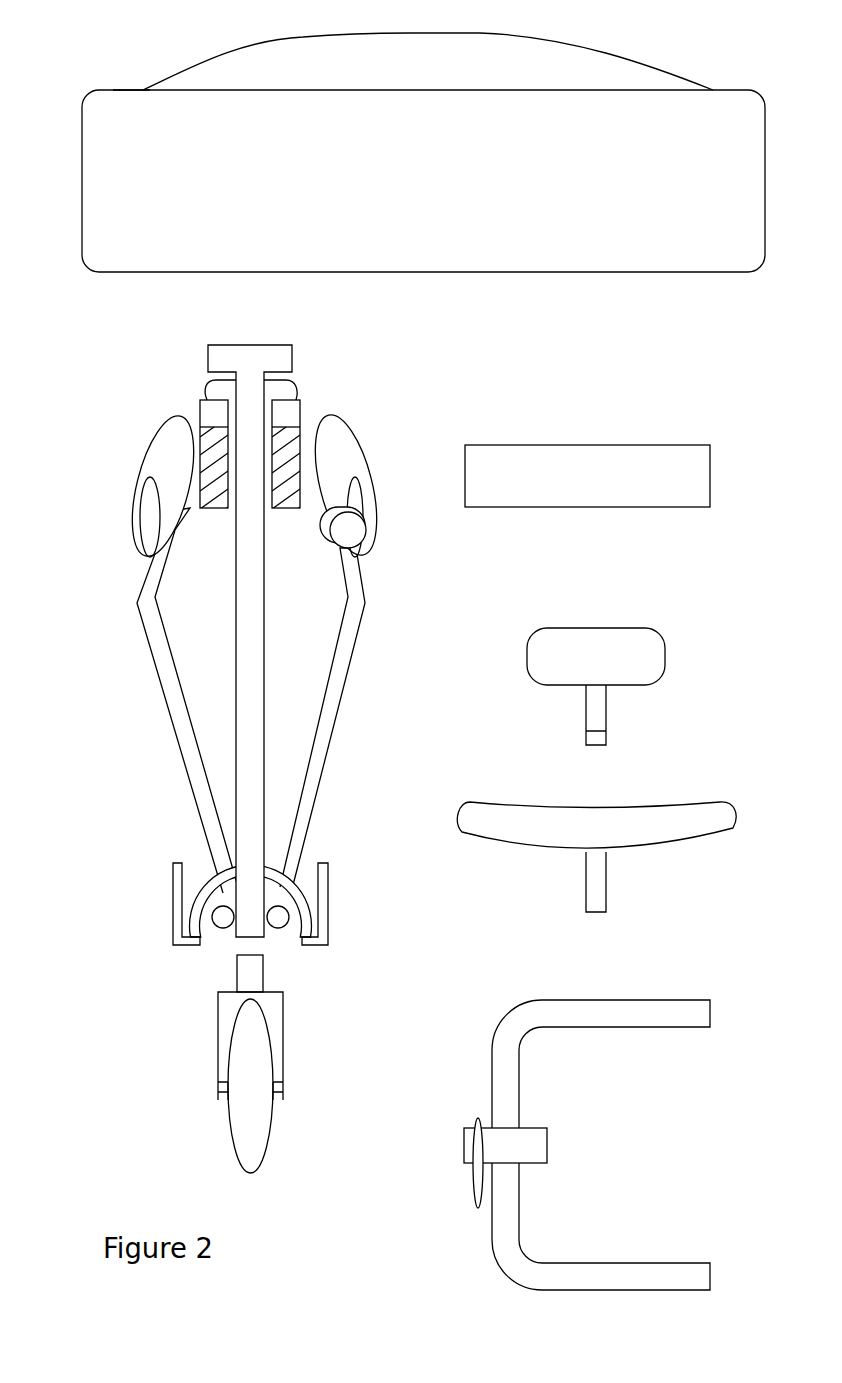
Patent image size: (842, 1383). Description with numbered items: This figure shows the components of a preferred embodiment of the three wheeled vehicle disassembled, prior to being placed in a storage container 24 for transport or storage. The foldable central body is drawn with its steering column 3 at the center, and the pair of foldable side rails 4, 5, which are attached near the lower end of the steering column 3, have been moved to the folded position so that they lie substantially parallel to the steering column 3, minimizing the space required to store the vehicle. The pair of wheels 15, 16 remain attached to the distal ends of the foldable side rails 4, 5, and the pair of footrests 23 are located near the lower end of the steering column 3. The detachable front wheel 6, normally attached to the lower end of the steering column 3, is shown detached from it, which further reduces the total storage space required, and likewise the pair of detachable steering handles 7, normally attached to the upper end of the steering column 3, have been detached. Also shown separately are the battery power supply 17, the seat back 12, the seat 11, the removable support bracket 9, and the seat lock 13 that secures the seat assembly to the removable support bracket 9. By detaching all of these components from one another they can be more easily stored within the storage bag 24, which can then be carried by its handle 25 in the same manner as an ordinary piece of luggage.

The handle 25 is at (220, 53).
The storage container 24 is at (608, 253).
The detachable steering handles 7 is at (197, 400).
The wheel 16 is at (155, 453).
The wheel 15 is at (345, 445).
The steering column 3 is at (245, 663).
The foldable side rail 5 is at (152, 672).
The foldable side rail 4 is at (337, 670).
The footrests 23 is at (173, 908).
The detachable front wheel 6 is at (237, 1037).
The battery power supply 17 is at (618, 463).
The seat back 12 is at (600, 645).
The seat 11 is at (655, 827).
The removable support bracket 9 is at (573, 1017).
The seat lock 13 is at (470, 1145).